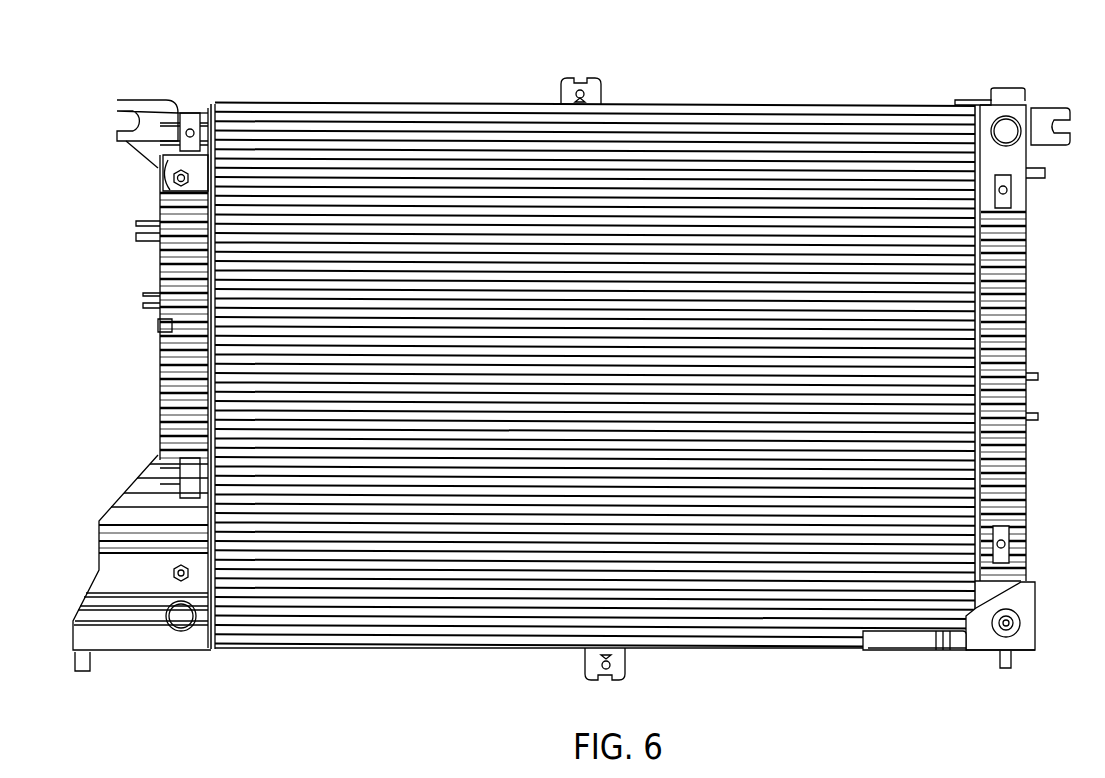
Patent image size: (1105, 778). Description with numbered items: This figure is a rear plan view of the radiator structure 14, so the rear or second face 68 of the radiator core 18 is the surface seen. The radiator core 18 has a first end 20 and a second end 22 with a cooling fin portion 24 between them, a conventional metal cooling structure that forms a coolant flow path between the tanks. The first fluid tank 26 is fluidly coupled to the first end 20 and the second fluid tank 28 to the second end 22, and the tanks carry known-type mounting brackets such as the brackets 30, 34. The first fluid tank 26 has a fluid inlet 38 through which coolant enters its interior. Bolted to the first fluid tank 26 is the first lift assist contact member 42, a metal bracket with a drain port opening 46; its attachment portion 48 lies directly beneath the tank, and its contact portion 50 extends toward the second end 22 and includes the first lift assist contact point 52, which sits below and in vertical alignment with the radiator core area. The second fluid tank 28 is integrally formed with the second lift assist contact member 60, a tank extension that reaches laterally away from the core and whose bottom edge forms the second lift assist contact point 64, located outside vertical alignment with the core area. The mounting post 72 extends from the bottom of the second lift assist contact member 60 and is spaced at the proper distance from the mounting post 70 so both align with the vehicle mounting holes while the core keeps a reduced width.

The radiator structure 14 is at (748, 48).
The radiator core 18 is at (802, 648).
The first end 20 is at (970, 95).
The second end 22 is at (208, 97).
The cooling fin portion 24 is at (318, 606).
The first fluid tank 26 is at (1010, 336).
The second fluid tank 28 is at (160, 345).
The mounting bracket 30 is at (1042, 99).
The mounting bracket 34 is at (118, 91).
The fluid inlet 38 is at (1000, 90).
The first lift assist contact member 42 is at (1034, 632).
The drain port opening 46 is at (1005, 610).
The attachment portion 48 is at (972, 652).
The contact portion 50 is at (921, 675).
The first lift assist contact point 52 is at (870, 645).
The second lift assist contact member 60 is at (72, 561).
The second lift assist contact point 64 is at (150, 645).
The second face 68 is at (458, 580).
The mounting post 70 is at (1004, 654).
The mounting post 72 is at (74, 664).